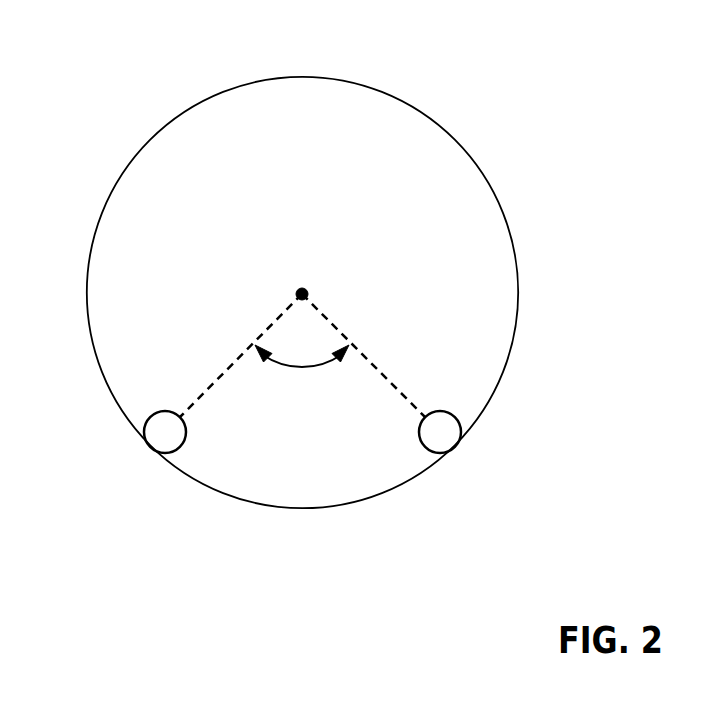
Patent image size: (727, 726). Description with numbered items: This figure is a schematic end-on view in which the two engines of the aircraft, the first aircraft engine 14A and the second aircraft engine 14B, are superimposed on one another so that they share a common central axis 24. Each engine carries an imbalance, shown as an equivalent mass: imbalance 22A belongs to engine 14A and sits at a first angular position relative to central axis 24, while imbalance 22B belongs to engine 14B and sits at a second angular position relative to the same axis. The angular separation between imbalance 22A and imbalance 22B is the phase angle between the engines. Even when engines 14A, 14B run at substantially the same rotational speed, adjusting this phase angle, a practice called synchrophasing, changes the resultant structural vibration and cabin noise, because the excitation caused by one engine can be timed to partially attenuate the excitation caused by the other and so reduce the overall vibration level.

The first aircraft engine 14A is at (452, 68).
The second aircraft engine 14B is at (373, 255).
The central axis 24 is at (308, 293).
The imbalance 22A is at (154, 433).
The imbalance 22B is at (452, 432).